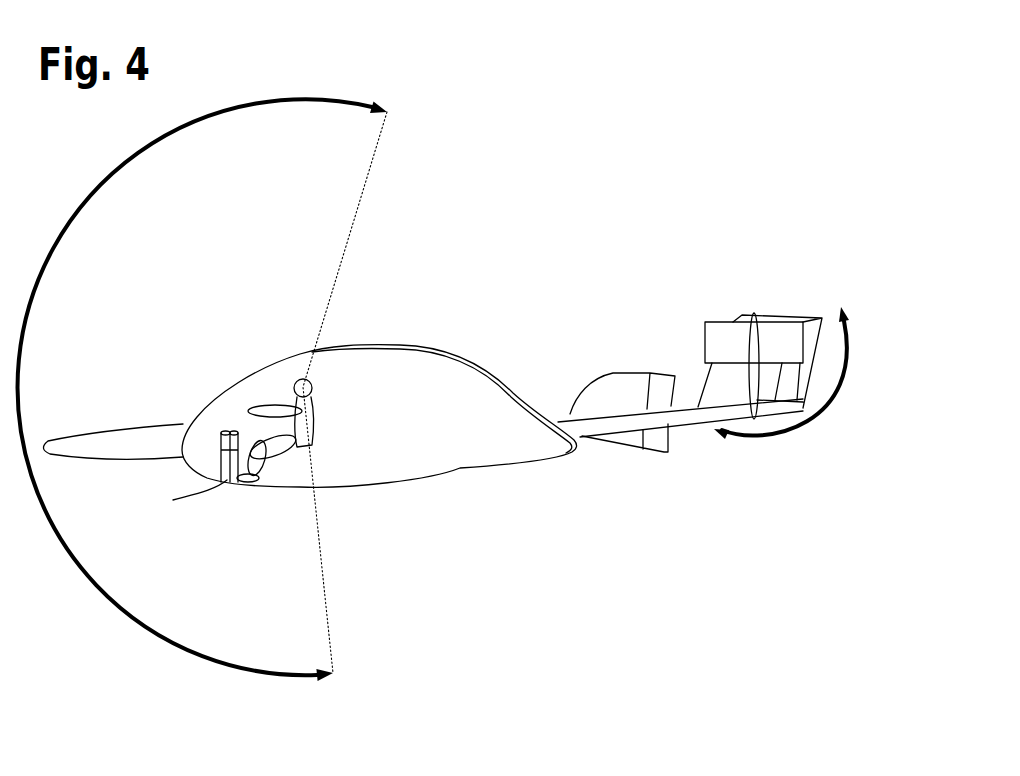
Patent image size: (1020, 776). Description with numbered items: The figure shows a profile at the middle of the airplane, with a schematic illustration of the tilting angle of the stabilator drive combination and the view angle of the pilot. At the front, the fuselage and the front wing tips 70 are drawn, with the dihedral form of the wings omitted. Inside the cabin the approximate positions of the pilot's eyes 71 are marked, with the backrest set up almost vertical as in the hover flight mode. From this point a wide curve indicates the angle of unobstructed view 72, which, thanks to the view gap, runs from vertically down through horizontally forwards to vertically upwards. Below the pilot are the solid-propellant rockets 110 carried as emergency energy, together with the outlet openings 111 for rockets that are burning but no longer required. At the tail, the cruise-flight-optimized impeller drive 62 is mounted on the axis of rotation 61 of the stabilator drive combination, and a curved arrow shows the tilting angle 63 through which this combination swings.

The front wing tips 70 is at (42, 441).
The angle of unobstructed view 72 is at (82, 205).
The approximate positions of the pilot's eyes 71 is at (315, 387).
The outlet openings for burning solid-propellant rockets 111 is at (222, 432).
The solid-propellant rockets 110 is at (231, 483).
The cruise-flight-optimized impeller drive 62 is at (797, 322).
The axis of rotation of the stabilator drive combination 61 is at (752, 342).
The tilting angle of the stabilator drive combination 63 is at (800, 427).